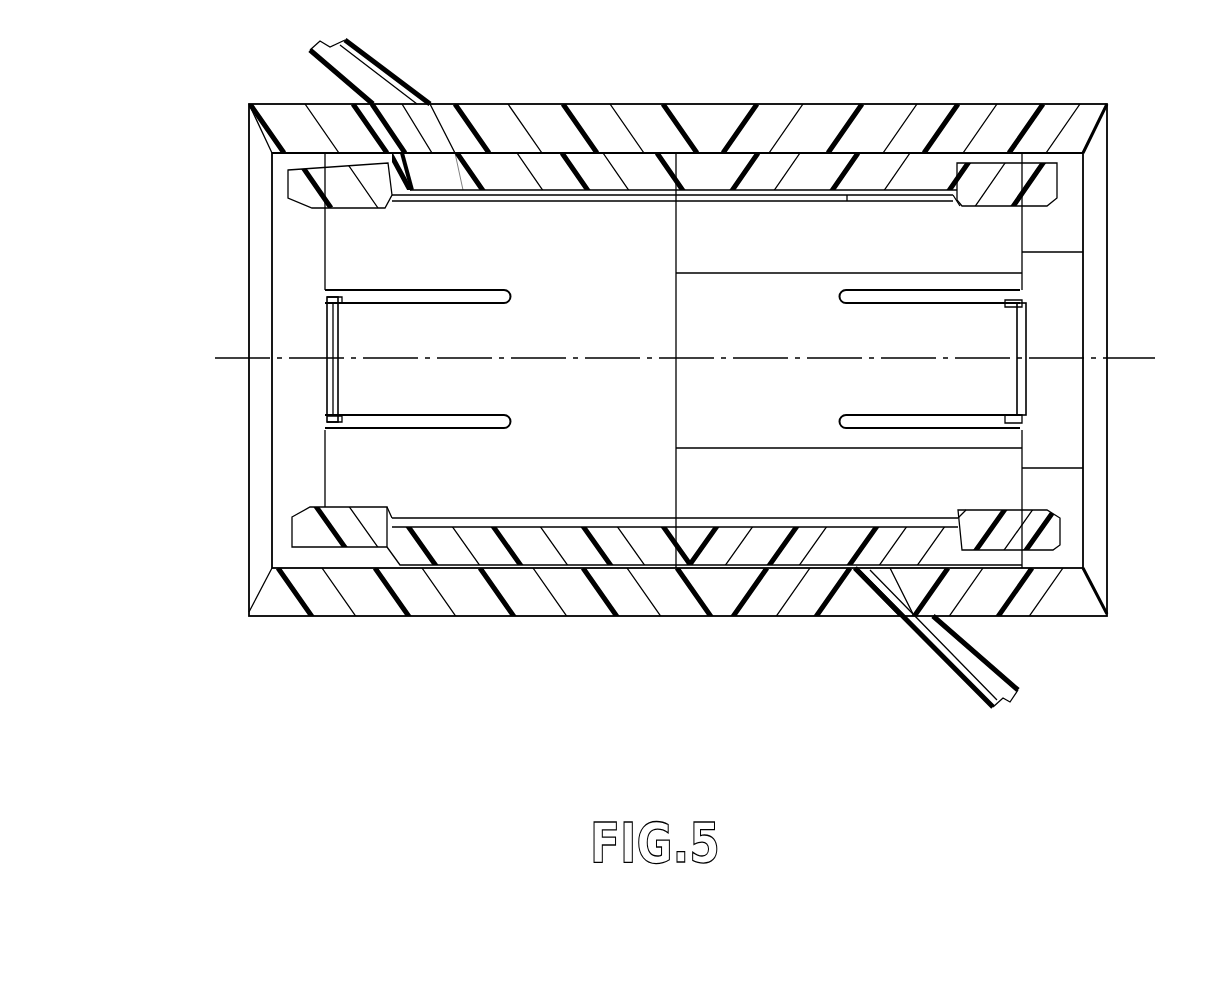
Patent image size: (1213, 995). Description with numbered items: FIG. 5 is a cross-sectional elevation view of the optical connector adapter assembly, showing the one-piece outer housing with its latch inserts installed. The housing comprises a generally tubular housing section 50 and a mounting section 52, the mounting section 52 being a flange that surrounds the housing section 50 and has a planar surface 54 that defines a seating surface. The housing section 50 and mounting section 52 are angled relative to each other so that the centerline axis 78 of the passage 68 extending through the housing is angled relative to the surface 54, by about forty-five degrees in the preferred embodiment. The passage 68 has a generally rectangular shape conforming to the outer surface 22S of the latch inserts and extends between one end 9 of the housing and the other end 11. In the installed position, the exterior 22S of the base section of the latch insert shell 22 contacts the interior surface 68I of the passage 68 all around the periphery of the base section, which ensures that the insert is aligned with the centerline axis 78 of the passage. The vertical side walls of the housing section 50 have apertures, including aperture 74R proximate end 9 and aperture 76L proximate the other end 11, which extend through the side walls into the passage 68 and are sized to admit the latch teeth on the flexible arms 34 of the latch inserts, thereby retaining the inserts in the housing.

The end of the housing 9 is at (1107, 107).
The end of the housing section 11 is at (247, 132).
The latch insert shell 22 is at (713, 160).
The outer surface of the latch insert 22S is at (745, 568).
The flexible arms 34 is at (336, 405).
The housing section 50 is at (768, 105).
The mounting section 52 is at (337, 73).
The planar surface 54 is at (393, 78).
The passage 68 is at (1066, 220).
The interior surface of the passage 68I is at (632, 150).
The aperture 74R is at (1026, 303).
The aperture 76L is at (335, 300).
The centerline axis of the passage 78 is at (215, 362).